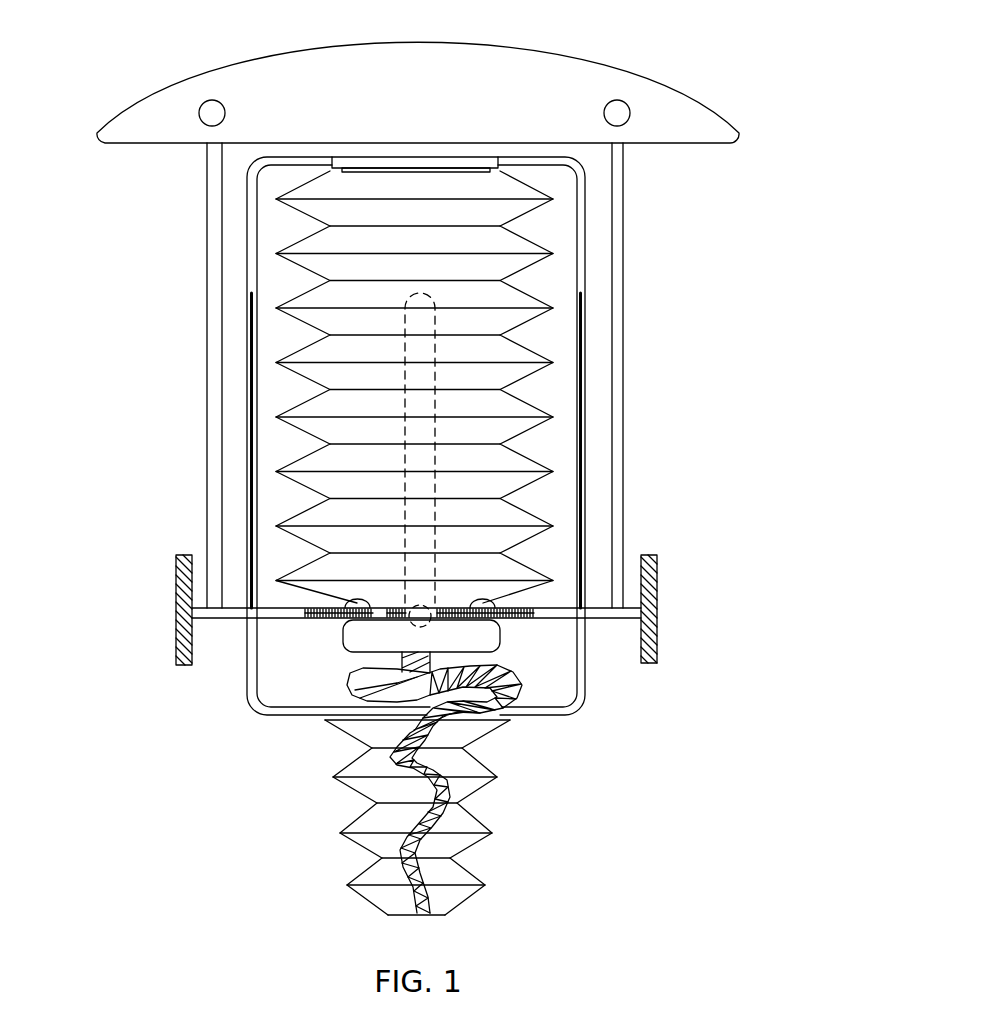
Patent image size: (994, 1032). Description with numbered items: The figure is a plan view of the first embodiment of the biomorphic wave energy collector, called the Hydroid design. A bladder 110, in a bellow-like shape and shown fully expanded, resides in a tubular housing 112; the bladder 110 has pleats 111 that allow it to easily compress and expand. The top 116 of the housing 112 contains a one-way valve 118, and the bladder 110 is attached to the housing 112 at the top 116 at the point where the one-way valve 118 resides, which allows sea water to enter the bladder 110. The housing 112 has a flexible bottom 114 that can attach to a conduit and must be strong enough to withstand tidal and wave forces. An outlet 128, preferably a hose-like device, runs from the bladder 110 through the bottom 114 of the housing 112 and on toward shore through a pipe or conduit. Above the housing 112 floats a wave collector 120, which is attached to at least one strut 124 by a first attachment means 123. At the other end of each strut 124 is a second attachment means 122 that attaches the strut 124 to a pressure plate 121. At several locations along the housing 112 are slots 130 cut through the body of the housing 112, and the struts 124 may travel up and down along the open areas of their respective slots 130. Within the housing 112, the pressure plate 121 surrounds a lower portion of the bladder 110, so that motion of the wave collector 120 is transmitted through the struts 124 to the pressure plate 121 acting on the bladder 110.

The bladder 110 is at (483, 389).
The pleats 111 is at (543, 300).
The tubular housing 112 is at (568, 400).
The flexible bottom 114 is at (478, 782).
The top 116 is at (535, 160).
The one-way valve 118 is at (413, 157).
The wave collector 120 is at (255, 75).
The pressure plate 121 is at (335, 622).
The second attachment means 122 is at (470, 603).
The first attachment means 123 is at (203, 112).
The strut 124 is at (207, 330).
The outlet 128 is at (430, 826).
The slots 130 is at (400, 308).